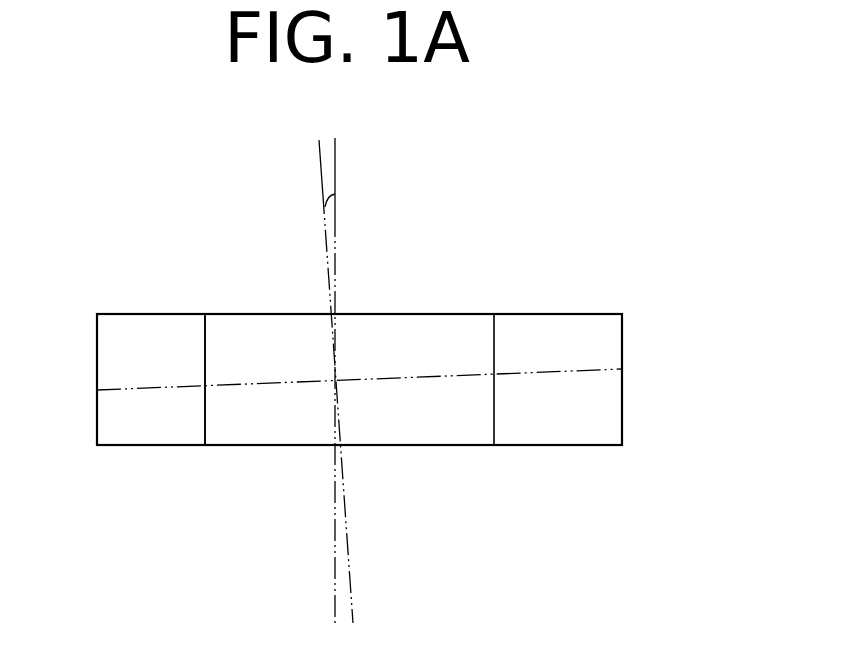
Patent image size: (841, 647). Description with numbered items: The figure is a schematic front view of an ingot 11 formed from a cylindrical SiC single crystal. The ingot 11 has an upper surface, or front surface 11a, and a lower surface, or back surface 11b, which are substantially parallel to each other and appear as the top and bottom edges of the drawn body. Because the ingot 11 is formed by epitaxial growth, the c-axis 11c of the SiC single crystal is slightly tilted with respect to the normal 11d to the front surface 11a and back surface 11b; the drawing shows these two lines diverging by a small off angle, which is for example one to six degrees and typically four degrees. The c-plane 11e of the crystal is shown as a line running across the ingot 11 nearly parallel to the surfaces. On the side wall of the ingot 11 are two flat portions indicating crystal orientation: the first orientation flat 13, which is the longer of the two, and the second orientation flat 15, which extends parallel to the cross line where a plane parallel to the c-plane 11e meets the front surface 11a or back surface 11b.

The ingot 11 is at (630, 320).
The upper surface (front surface) 11a is at (137, 314).
The lower surface (back surface) 11b is at (191, 446).
The c-axis 11c is at (320, 163).
The normal 11d is at (335, 152).
The c-plane 11e is at (550, 370).
The first orientation flat 13 is at (425, 430).
The second orientation flat 15 is at (96, 410).